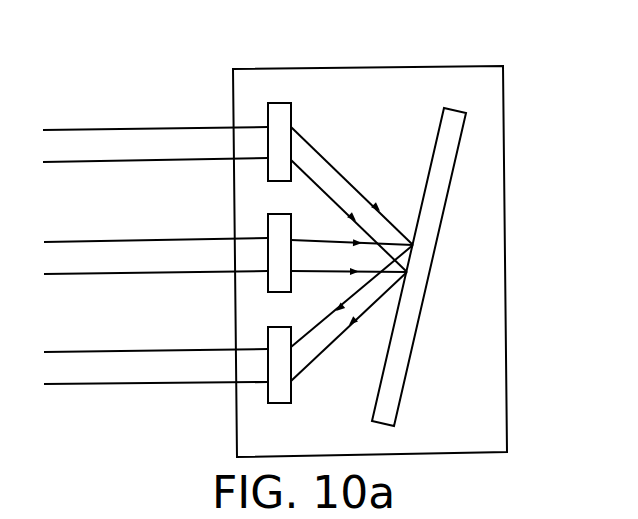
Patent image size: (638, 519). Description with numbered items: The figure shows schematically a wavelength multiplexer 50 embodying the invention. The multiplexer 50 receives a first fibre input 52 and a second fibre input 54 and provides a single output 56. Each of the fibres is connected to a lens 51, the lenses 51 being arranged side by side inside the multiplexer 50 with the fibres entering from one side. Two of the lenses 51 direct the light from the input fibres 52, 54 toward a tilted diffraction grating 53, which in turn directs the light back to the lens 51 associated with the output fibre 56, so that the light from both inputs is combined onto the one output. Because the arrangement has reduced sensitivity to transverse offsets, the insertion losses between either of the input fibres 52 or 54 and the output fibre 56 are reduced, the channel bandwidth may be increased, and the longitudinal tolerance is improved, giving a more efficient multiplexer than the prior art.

The wavelength multiplexer 50 is at (480, 67).
The lens 51 is at (268, 104).
The first fibre input 52 is at (123, 136).
The tilted mirror 53 is at (464, 128).
The second fibre input 54 is at (124, 247).
The output fibre 56 is at (124, 358).